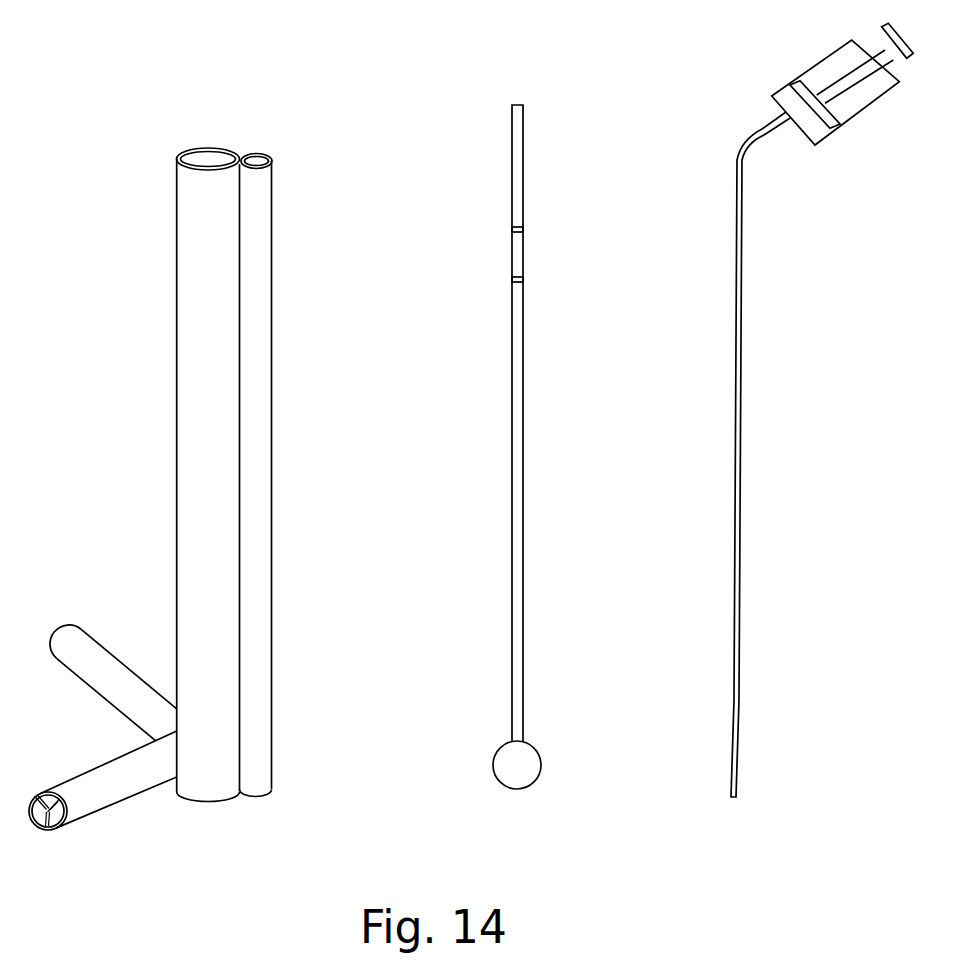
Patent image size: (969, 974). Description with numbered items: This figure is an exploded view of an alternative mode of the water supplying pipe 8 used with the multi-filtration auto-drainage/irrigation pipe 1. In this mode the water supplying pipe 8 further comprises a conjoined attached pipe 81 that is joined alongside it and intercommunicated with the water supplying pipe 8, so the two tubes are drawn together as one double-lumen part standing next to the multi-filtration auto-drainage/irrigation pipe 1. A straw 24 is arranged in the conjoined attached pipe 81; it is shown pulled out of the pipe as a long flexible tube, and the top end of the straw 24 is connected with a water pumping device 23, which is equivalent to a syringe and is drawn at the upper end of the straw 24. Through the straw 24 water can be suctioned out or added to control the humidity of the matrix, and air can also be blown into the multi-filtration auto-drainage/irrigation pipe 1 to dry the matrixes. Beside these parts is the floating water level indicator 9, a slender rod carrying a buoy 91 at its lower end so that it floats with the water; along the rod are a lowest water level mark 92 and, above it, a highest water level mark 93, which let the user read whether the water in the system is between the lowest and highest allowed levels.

The multi-filtration auto-drainage/irrigation pipe 1 is at (73, 650).
The water supplying pipe 8 is at (188, 472).
The conjoined attached pipe 81 is at (262, 350).
The floating water level indicator 9 is at (517, 607).
The buoy 91 is at (530, 765).
The lowest water level mark 92 is at (523, 278).
The highest water level mark 93 is at (523, 228).
The water pumping device 23 is at (820, 132).
The straw 24 is at (738, 442).